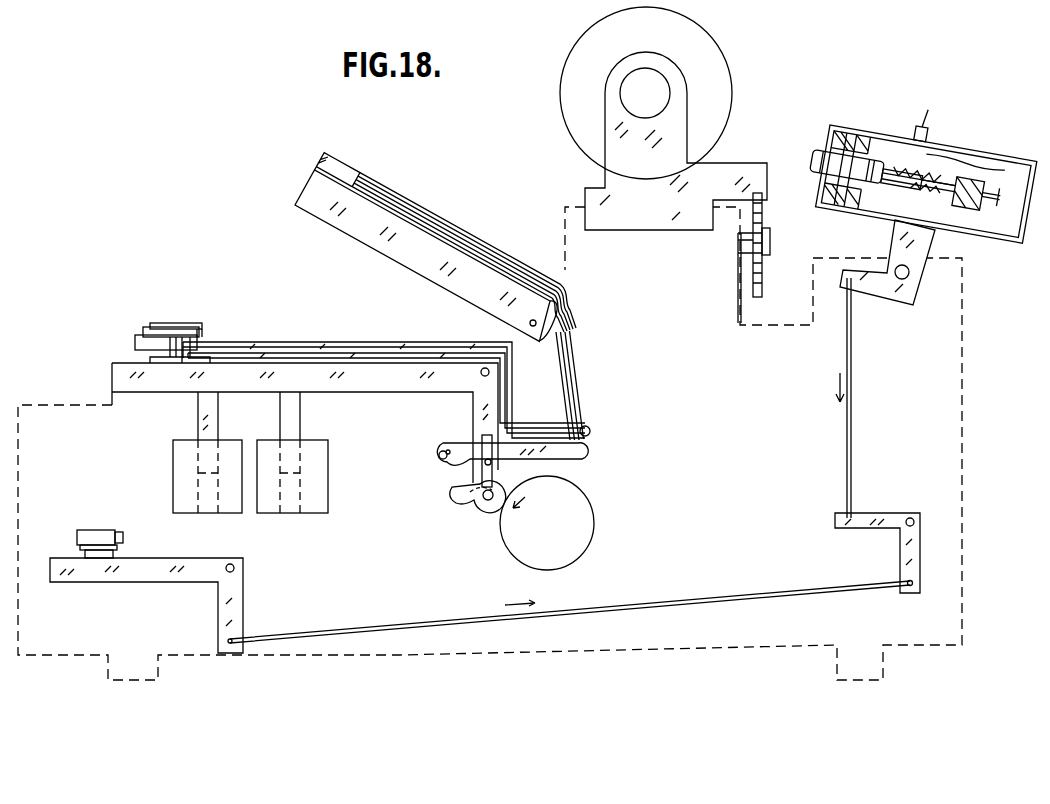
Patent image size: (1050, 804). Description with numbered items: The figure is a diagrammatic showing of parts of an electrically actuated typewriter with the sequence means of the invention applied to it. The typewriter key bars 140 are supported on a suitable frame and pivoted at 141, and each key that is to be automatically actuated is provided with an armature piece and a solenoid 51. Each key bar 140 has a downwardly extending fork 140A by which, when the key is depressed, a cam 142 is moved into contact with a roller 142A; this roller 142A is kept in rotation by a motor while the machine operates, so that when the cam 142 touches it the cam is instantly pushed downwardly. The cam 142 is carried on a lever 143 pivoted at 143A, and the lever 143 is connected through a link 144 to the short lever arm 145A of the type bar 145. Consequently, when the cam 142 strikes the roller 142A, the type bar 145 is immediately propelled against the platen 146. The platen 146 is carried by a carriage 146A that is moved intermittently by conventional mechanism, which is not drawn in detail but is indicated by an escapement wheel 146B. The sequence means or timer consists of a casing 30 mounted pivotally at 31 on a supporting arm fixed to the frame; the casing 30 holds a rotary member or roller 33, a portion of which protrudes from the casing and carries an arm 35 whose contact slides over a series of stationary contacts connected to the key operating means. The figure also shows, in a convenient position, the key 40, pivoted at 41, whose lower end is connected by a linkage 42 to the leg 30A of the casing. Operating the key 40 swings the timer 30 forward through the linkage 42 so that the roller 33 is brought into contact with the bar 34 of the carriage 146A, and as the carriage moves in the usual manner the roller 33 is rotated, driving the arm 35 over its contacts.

The casing 30 is at (886, 130).
The leg 30A is at (873, 293).
The pivot 31 is at (909, 273).
The rotary member 33 is at (815, 162).
The bar 34 is at (767, 190).
The arm 35 is at (902, 183).
The key 40 is at (95, 530).
The pivot 41 is at (236, 568).
The links 42 is at (380, 630).
The solenoid 51 is at (328, 498).
The key bar 140 is at (200, 330).
The fork 140A is at (495, 465).
The pivot 141 is at (490, 372).
The cam 142 is at (462, 497).
The roller 142A is at (547, 523).
The lever 143 is at (535, 462).
The pivot 143A is at (447, 459).
The link 144 is at (573, 400).
The type bar 145 is at (390, 252).
The short lever arm 145A is at (574, 325).
The platen 146 is at (646, 93).
The carriage 146A is at (676, 161).
The escapement wheel 146B is at (762, 270).